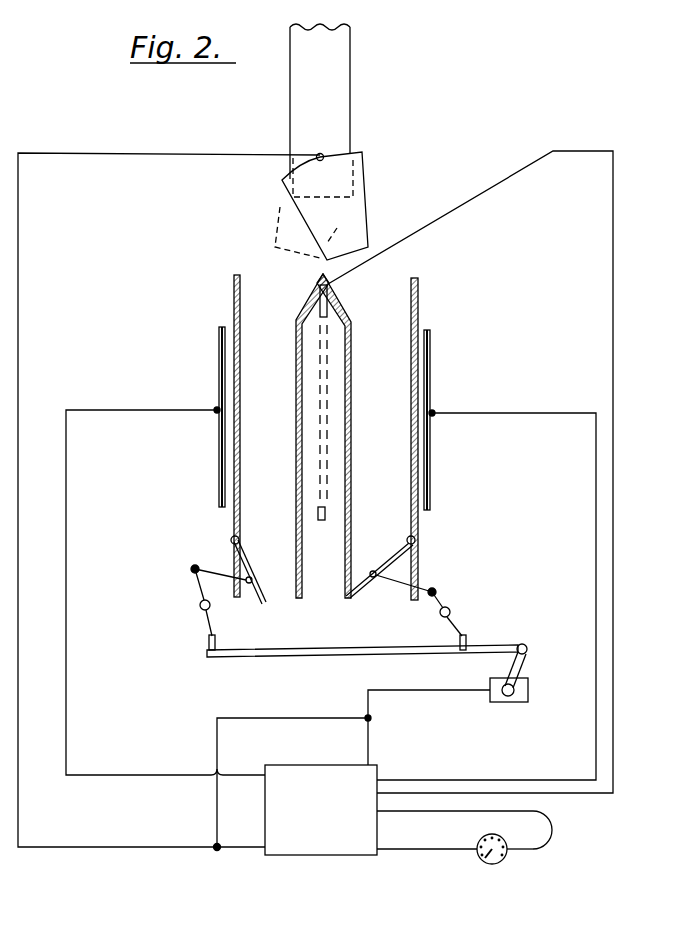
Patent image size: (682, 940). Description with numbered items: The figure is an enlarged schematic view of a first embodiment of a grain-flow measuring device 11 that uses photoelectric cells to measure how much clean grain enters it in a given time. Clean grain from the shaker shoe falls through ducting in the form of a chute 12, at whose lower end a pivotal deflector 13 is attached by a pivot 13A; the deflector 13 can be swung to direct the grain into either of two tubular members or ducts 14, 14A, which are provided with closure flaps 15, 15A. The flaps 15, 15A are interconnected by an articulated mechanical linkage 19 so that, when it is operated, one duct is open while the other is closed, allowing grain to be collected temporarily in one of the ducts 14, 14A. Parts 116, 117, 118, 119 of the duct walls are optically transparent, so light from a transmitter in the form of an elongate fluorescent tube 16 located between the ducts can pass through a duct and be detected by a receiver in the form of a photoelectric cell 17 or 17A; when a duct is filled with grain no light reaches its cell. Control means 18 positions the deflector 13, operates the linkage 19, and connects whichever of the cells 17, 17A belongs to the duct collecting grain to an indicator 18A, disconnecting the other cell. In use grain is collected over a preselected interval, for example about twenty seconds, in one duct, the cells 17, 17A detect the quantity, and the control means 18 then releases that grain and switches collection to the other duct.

The grain-flow measuring device 11 is at (446, 214).
The chute 12 is at (331, 97).
The pivotal deflector 13 is at (360, 216).
The pivot 13A is at (323, 155).
The tubular member or duct 14 is at (418, 300).
The tubular member or duct 14A is at (236, 292).
The closure flap 15 is at (385, 563).
The closure flap 15A is at (262, 565).
The elongate fluorescent tube 16 is at (317, 514).
The photoelectric cell 17 is at (430, 380).
The photoelectric cell 17A is at (220, 350).
The control means 18 is at (318, 815).
The indicator 18A is at (501, 862).
The articulated mechanical linkage 19 is at (497, 642).
The optically transparent wall part 116 is at (296, 391).
The optically transparent wall part 117 is at (240, 443).
The optically transparent wall part 118 is at (351, 394).
The optically transparent wall part 119 is at (411, 463).